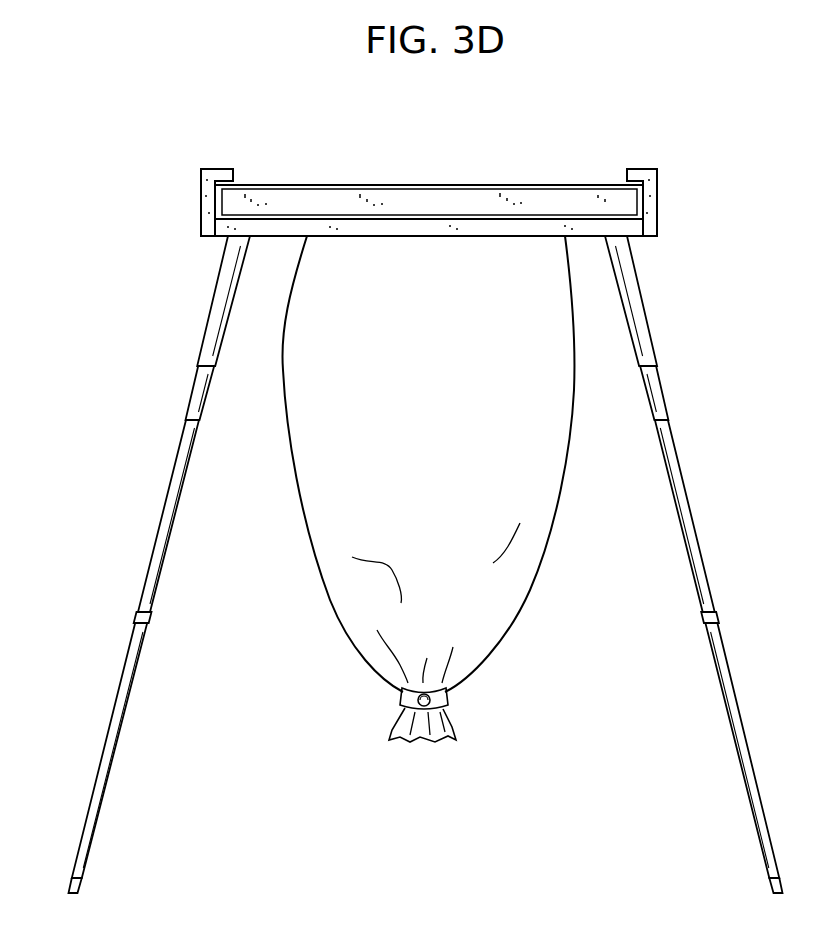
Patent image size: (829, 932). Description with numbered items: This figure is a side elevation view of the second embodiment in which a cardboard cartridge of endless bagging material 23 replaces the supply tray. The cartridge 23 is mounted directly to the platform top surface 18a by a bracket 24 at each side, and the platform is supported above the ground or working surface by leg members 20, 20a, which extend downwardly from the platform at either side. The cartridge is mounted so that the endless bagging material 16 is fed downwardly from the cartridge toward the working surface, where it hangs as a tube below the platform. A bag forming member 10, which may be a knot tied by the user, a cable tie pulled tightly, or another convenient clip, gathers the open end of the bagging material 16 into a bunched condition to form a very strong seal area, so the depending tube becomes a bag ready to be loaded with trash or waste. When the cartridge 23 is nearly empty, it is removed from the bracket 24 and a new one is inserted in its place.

The bag forming member 10 is at (447, 707).
The endless bagging material 16 is at (502, 633).
The platform top surface 18a is at (617, 220).
The leg members 20 is at (737, 752).
The leg 20a is at (114, 753).
The cardboard cartridge of bagging material 23 is at (580, 185).
The bracket 24 is at (201, 186).